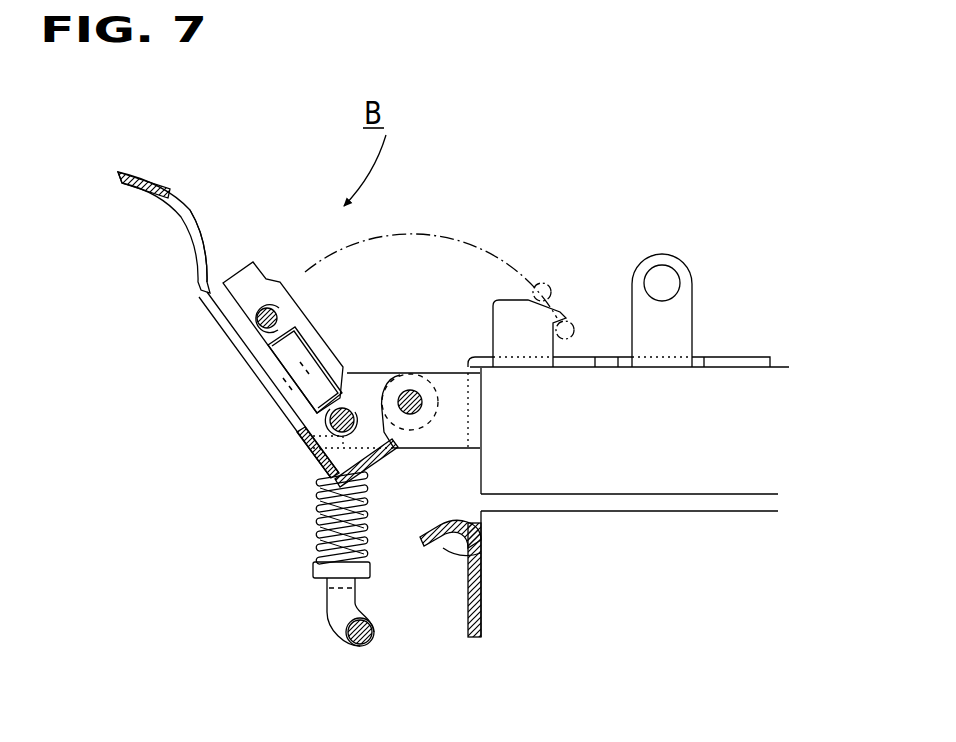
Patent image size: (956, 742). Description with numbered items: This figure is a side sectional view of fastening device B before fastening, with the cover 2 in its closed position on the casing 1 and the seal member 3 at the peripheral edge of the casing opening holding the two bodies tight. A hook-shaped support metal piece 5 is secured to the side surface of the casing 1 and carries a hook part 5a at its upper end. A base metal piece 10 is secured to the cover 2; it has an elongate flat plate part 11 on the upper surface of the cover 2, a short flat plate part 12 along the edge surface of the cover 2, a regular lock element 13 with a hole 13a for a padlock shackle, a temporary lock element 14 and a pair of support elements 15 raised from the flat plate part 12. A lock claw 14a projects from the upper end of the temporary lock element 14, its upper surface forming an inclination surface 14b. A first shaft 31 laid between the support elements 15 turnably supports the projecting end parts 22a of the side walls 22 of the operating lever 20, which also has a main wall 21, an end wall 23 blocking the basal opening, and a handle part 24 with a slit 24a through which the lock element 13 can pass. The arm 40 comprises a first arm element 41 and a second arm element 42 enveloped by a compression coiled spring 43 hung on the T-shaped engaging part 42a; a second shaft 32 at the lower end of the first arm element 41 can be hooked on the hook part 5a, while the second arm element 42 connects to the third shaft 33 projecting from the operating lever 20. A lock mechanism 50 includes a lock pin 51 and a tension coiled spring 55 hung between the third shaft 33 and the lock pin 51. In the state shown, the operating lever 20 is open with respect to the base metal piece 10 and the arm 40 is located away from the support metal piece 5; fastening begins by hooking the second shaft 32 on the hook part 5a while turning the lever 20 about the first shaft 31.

The casing 1 is at (745, 573).
The cover 2 is at (749, 421).
The seal member 3 is at (733, 494).
The support metal piece 5 is at (483, 596).
The hook part 5a is at (440, 553).
The base metal piece 10 is at (767, 346).
The elongate flat plate part 11 is at (722, 355).
The short flat plate part 12 is at (483, 419).
The regular lock element 13 is at (690, 270).
The hole 13a is at (661, 282).
The temporary lock element 14 is at (506, 298).
The lock claw 14a is at (567, 318).
The inclination surface 14b is at (552, 297).
The support elements 15 is at (445, 372).
The operating lever 20 is at (198, 306).
The main wall 21 is at (226, 342).
The side walls 22 is at (242, 268).
The projecting end parts 22a is at (440, 456).
The end wall 23 is at (390, 449).
The handle part 24 is at (137, 178).
The slit 24a is at (202, 222).
The first shaft 31 is at (410, 390).
The second shaft 32 is at (364, 645).
The third shaft 33 is at (344, 402).
The arm 40 is at (300, 596).
The first arm element 41 is at (333, 615).
The second arm element 42 is at (307, 437).
The engaging part 42a is at (313, 570).
The compression coiled spring 43 is at (315, 499).
The lock mechanism 50 is at (291, 392).
The lock pin 51 is at (258, 310).
The tension coiled spring 55 is at (284, 363).